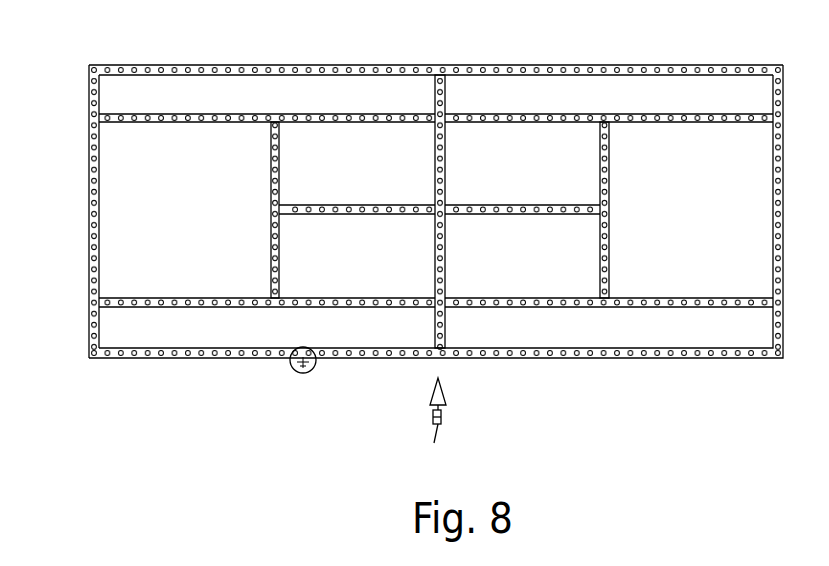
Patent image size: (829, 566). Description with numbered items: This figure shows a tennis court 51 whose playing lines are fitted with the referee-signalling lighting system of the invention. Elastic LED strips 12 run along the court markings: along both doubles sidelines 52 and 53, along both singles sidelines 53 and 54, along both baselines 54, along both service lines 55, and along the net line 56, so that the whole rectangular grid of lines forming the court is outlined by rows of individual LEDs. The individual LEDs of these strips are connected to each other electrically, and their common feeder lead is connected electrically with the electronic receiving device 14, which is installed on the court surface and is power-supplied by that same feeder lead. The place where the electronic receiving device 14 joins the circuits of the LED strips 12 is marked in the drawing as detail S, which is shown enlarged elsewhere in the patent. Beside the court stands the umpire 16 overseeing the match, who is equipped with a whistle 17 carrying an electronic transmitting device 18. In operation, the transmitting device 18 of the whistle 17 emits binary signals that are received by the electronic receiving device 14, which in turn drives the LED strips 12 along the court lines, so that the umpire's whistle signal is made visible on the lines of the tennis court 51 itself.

The elastic LED strips 12 is at (607, 193).
The electronic receiving device 14 is at (302, 372).
The detail of connection S is at (317, 371).
The umpire 16 is at (430, 401).
The whistle 17 is at (432, 445).
The electronic transmitting device 18 is at (435, 475).
The tennis court 51 is at (483, 155).
The doubles sideline 52 is at (255, 40).
The doubles sideline / singles sideline 53 is at (167, 113).
The singles sideline / baseline 54 is at (88, 111).
The service line 55 is at (600, 142).
The net line 56 is at (530, 208).